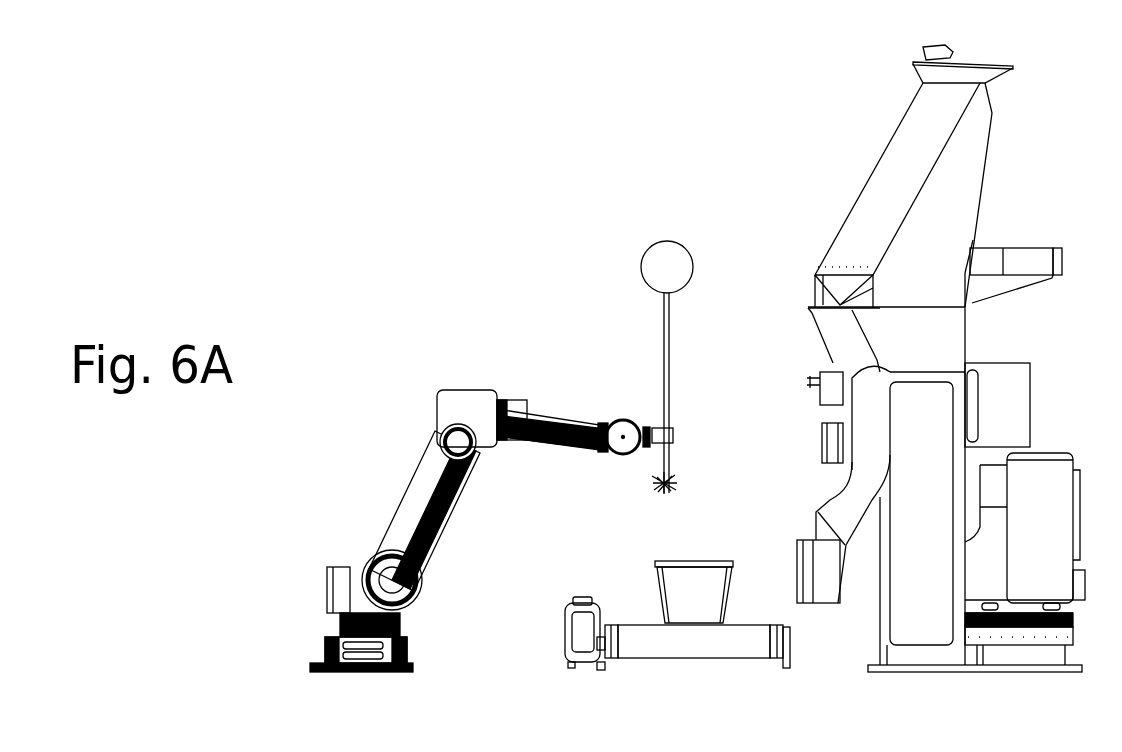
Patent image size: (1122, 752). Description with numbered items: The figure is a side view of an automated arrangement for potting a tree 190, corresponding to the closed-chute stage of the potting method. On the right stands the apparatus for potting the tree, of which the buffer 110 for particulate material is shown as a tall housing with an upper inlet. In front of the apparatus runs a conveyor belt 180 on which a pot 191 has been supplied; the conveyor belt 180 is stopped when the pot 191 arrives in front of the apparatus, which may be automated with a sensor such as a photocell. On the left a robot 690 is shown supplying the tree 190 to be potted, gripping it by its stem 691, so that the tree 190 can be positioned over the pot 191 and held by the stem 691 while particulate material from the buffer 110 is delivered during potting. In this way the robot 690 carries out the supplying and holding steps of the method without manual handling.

The buffer 110 is at (898, 170).
The conveyor belt 180 is at (745, 627).
The tree 190 is at (632, 247).
The pot 191 is at (680, 608).
The robot 690 is at (373, 513).
The stem 691 is at (665, 365).